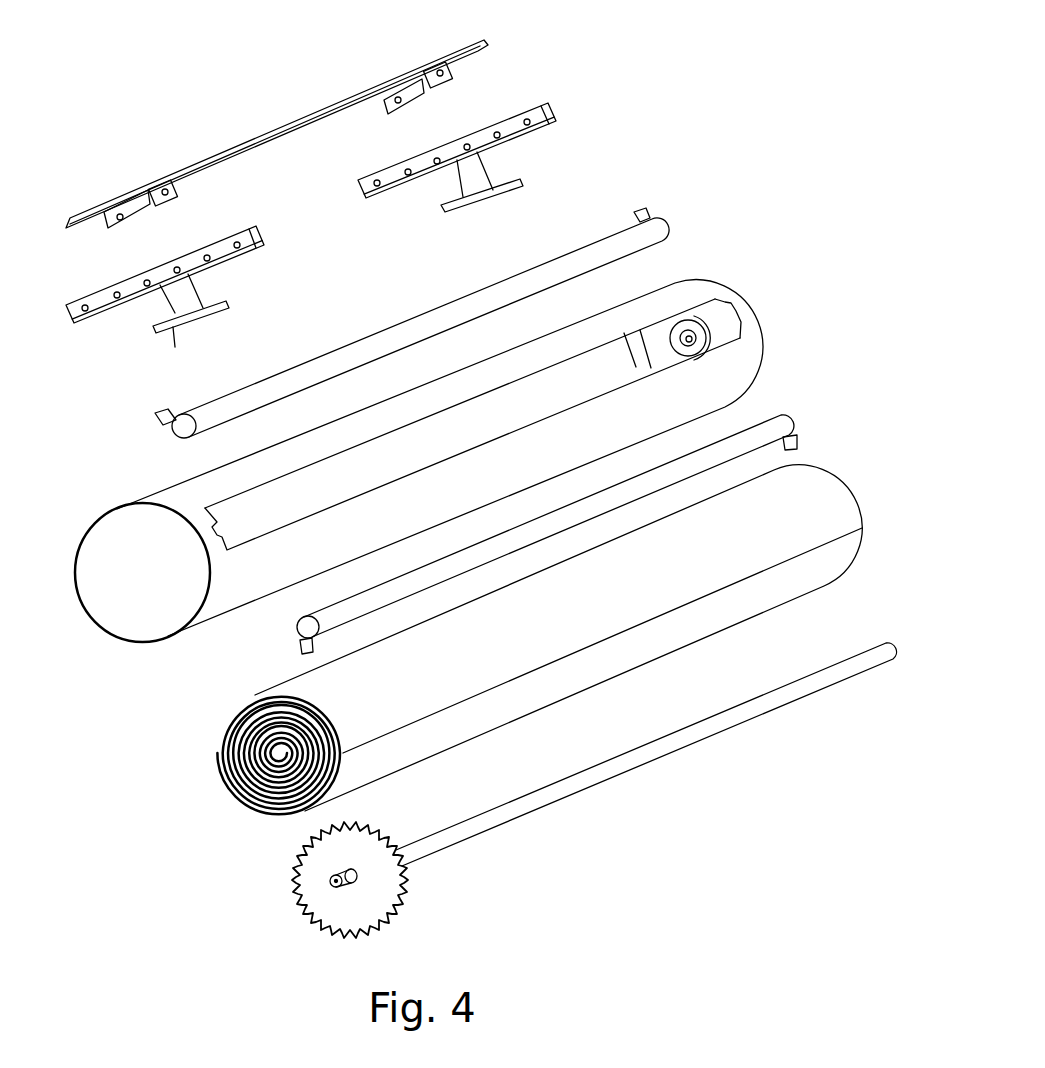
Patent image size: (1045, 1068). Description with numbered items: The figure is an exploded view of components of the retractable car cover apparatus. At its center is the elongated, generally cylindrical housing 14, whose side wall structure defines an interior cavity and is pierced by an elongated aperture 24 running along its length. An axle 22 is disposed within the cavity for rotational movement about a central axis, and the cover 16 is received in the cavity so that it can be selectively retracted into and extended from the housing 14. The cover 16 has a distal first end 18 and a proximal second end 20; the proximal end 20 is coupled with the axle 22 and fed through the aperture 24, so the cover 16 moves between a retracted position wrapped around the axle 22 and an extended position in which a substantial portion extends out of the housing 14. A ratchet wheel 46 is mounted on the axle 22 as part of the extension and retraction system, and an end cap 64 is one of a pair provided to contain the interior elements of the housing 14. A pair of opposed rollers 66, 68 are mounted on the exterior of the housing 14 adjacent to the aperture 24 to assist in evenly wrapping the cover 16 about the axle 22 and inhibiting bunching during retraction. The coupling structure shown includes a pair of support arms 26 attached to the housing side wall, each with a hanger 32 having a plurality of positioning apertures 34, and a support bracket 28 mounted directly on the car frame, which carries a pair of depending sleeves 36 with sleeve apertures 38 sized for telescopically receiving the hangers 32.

The housing 14 is at (303, 560).
The cover 16 is at (813, 510).
The distal first end 18 is at (837, 570).
The proximal second end 20 is at (283, 750).
The axle 22 is at (538, 800).
The elongated aperture 24 is at (238, 520).
The support arms 26 is at (543, 172).
The support bracket 28 is at (232, 124).
The hanger 32 is at (519, 116).
The positioning apertures 34 is at (437, 164).
The depending sleeves 36 is at (130, 200).
The sleeve apertures 38 is at (152, 198).
The ratchet wheel 46 is at (354, 918).
The end cap 64 is at (641, 355).
The roller 66 is at (777, 430).
The roller 68 is at (655, 232).